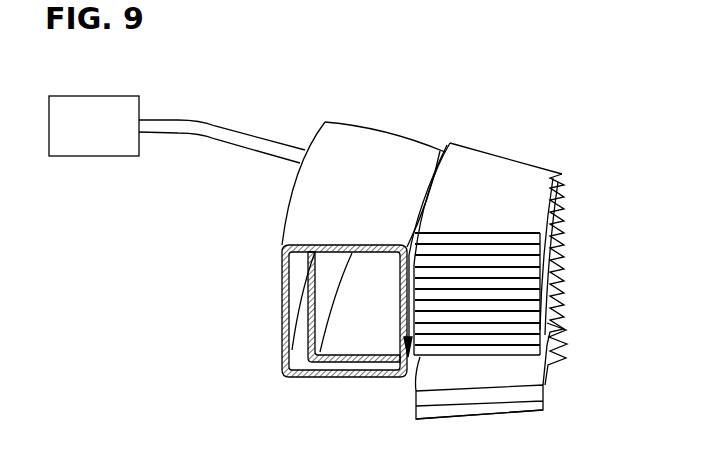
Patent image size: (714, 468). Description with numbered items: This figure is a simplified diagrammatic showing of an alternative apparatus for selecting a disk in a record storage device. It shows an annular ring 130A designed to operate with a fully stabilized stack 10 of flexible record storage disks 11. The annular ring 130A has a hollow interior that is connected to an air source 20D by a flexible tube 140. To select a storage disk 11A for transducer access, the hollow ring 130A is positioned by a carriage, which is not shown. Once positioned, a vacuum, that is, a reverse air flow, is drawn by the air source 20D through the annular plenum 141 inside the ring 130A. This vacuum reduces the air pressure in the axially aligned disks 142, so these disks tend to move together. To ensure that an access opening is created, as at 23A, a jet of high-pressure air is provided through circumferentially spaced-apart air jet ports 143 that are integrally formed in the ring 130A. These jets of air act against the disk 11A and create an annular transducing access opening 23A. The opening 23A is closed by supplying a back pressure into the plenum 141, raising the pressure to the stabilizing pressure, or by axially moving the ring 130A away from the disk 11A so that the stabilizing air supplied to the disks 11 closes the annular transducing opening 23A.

The stack 10 is at (492, 278).
The flexible record storage disks 11 is at (538, 177).
The storage disk 11A is at (425, 388).
The air source 20D is at (114, 95).
The annular transducing access opening 23A is at (495, 382).
The annular ring 130A is at (362, 145).
The flexible tube 140 is at (212, 129).
The annular plenum 141 is at (377, 324).
The axially aligned disks 142 is at (570, 233).
The air jet ports 143 is at (340, 367).